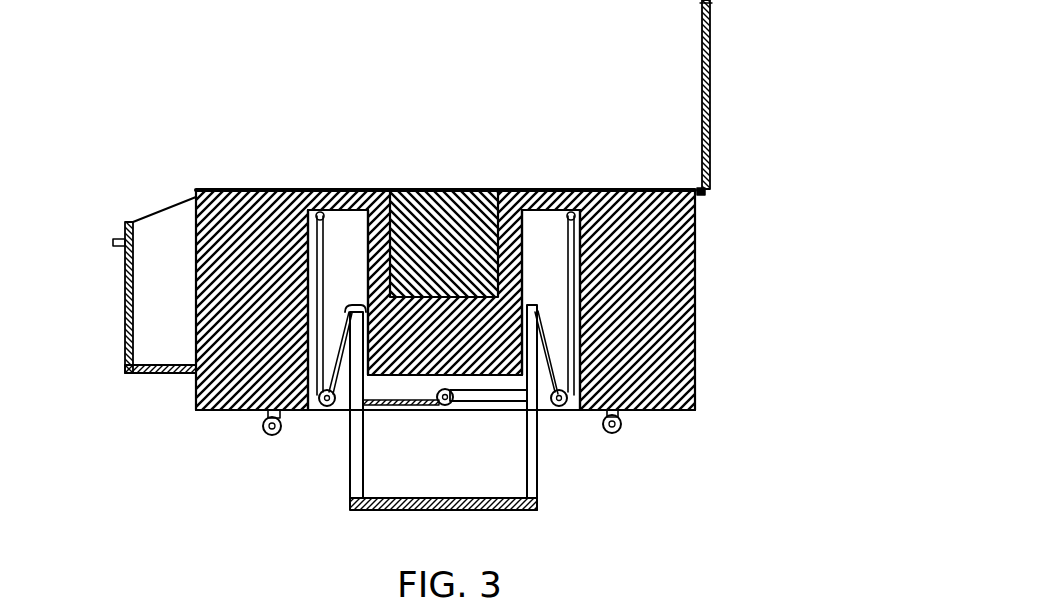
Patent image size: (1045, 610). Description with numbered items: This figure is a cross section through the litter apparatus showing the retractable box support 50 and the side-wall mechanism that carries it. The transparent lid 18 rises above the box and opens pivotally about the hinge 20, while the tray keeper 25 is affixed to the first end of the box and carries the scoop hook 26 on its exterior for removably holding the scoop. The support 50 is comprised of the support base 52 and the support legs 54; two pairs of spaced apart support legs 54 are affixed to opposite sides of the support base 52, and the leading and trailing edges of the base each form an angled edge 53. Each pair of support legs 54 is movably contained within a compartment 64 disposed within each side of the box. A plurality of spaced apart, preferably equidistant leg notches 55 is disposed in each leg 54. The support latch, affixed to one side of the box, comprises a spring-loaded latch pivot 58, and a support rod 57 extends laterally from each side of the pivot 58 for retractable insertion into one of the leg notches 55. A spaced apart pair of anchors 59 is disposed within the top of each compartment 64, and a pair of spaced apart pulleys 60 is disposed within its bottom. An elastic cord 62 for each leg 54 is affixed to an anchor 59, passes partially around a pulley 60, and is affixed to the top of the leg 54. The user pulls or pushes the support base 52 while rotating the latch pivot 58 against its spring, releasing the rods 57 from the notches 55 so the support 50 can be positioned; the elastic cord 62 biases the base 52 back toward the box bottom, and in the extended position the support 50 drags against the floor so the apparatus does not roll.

The transparent lid 18 is at (711, 110).
The hinge 20 is at (700, 192).
The tray keeper 25 is at (123, 283).
The scoop hook 26 is at (112, 242).
The support 50 is at (467, 446).
The support base 52 is at (495, 512).
The angled edge 53 is at (565, 528).
The support leg 54 is at (350, 440).
The leg notch 55 is at (372, 405).
The support rod 57 is at (424, 411).
The latch pivot 58 is at (447, 407).
The anchor 59 is at (345, 190).
The pulley 60 is at (327, 410).
The elastic cord 62 is at (318, 258).
The compartment 64 is at (307, 417).